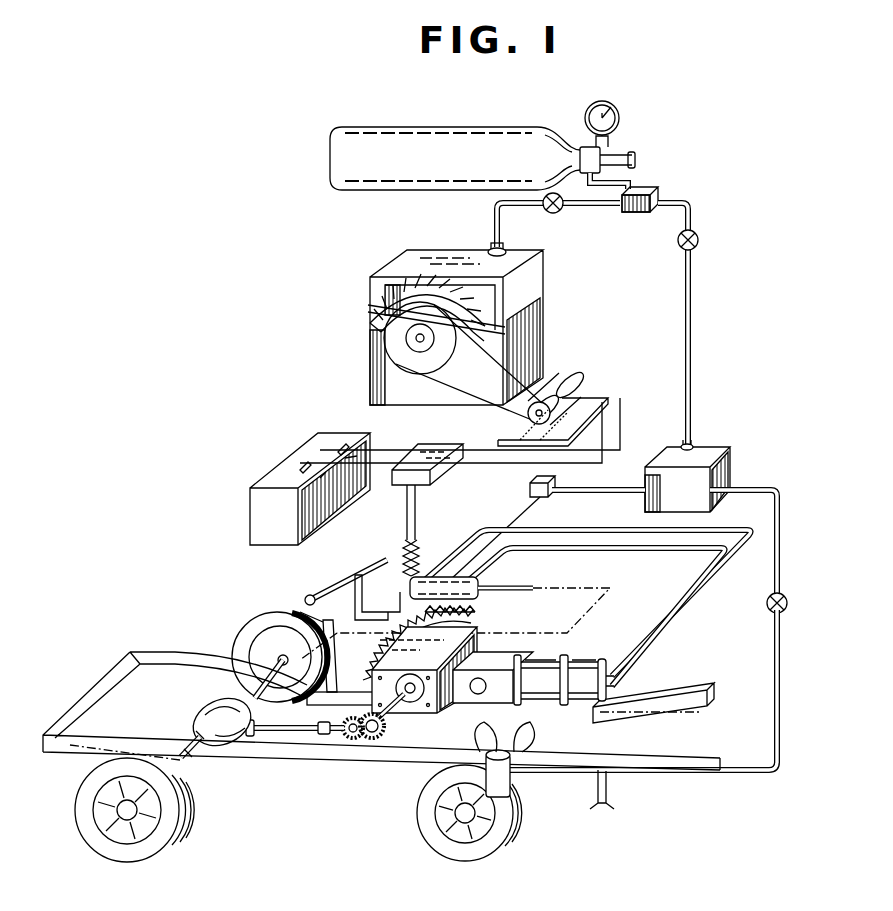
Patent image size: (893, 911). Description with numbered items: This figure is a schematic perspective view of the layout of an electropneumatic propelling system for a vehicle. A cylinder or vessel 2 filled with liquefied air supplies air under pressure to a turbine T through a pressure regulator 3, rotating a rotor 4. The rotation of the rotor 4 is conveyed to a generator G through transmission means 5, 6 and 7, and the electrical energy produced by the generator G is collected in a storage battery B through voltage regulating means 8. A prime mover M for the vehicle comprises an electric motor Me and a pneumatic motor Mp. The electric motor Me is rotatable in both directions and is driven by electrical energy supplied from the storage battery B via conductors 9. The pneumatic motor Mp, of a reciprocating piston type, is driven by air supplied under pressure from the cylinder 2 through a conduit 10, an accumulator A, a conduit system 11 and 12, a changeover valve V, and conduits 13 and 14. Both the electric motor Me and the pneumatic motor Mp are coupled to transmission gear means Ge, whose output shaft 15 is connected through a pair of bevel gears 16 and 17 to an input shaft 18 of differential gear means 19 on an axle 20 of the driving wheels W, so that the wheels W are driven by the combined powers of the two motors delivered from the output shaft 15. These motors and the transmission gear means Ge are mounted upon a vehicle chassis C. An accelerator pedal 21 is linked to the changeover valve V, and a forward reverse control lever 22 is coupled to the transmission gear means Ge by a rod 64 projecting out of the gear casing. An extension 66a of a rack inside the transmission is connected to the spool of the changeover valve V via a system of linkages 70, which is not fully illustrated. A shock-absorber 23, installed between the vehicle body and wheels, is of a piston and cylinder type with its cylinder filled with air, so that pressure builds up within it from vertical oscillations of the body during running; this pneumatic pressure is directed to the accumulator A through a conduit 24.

The cylinder or vessel 2 is at (455, 127).
The pressure regulator 3 is at (660, 192).
The rotor 4 is at (385, 298).
The transmission means 5 is at (385, 345).
The transmission means 6 is at (470, 405).
The transmission means 7 is at (520, 431).
The voltage regulating means 8 is at (440, 482).
The conductors 9 is at (408, 518).
The conduit 10 is at (690, 372).
The conduit system 11 is at (627, 488).
The conduit system 12 is at (512, 513).
The conduit 13 is at (690, 550).
The conduit 14 is at (728, 530).
The output shaft 15 is at (393, 712).
The bevel gear 16 is at (378, 738).
The bevel gear 17 is at (358, 740).
The input shaft 18 is at (262, 738).
The differential gear means 19 is at (205, 720).
The axle 20 is at (200, 765).
The accelerator pedal 21 is at (350, 588).
The forward reverse control lever 22 is at (305, 615).
The shock-absorber 23 is at (520, 790).
The conduit 24 is at (777, 650).
The rod 64 is at (330, 736).
The extension 66a is at (300, 742).
The system of linkages 70 is at (610, 594).
The accumulator A is at (730, 465).
The storage battery B is at (250, 520).
The vehicle chassis C is at (228, 775).
The generator G is at (575, 385).
The prime mover M is at (505, 648).
The electric motor Me is at (478, 614).
The pneumatic motor Mp is at (545, 705).
The transmission gear means Ge is at (420, 712).
The turbine T is at (540, 280).
The changeover valve V is at (483, 583).
The driving wheels W is at (255, 632).